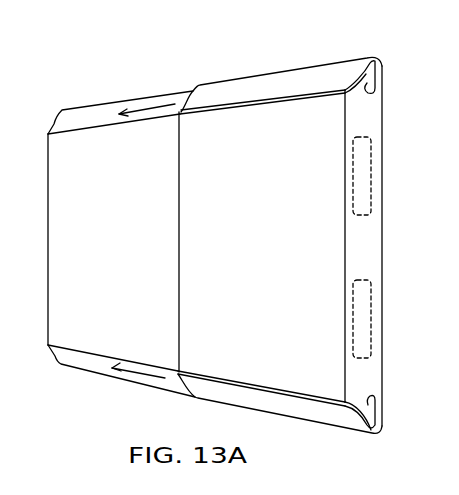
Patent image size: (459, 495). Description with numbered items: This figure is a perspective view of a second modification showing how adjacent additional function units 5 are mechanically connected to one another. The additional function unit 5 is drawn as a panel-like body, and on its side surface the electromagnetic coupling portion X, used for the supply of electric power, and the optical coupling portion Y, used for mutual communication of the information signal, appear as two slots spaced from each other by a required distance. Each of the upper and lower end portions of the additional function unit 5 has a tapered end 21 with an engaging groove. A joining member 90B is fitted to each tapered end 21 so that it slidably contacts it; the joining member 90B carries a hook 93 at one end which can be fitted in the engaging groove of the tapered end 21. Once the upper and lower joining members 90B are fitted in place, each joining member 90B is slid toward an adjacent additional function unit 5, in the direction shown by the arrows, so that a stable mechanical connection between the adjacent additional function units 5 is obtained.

The additional function unit 5 is at (70, 200).
The joining member 90B is at (277, 84).
The hook 93 is at (375, 87).
The tapered end 21 is at (372, 411).
The electromagnetic coupling portion X is at (362, 175).
The optical coupling portion Y is at (362, 312).